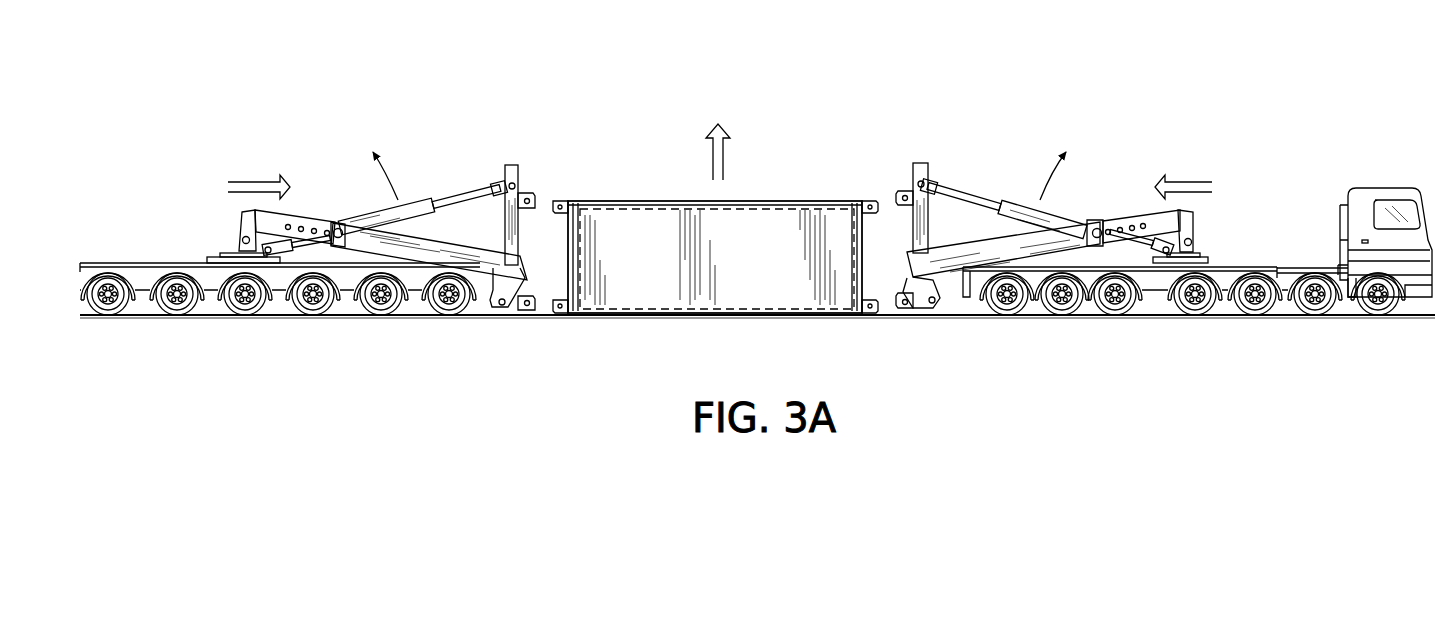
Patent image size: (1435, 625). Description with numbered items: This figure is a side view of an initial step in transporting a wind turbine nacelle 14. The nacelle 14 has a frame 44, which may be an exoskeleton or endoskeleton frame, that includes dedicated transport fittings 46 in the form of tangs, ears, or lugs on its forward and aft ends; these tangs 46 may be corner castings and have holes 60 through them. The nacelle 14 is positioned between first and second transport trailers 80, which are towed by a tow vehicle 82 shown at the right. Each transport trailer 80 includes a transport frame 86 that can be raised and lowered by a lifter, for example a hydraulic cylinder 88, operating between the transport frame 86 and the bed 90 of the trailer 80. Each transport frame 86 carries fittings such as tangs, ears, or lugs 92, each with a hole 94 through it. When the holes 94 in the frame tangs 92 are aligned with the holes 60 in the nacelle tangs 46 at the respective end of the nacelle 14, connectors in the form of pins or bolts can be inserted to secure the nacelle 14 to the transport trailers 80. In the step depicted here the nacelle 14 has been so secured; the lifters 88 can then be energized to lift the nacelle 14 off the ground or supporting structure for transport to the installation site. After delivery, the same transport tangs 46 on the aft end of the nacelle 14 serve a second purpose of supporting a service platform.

The nacelle 14 is at (762, 178).
The frame 44 is at (661, 200).
The transport fittings 46 is at (562, 202).
The holes 60 is at (873, 203).
The transport trailer 80 is at (191, 180).
The tow vehicle 82 is at (1396, 190).
The transport frame 86 is at (480, 95).
The hydraulic cylinder 88 is at (379, 212).
The bed 90 is at (151, 263).
The tangs 92 is at (530, 195).
The hole 94 is at (905, 193).